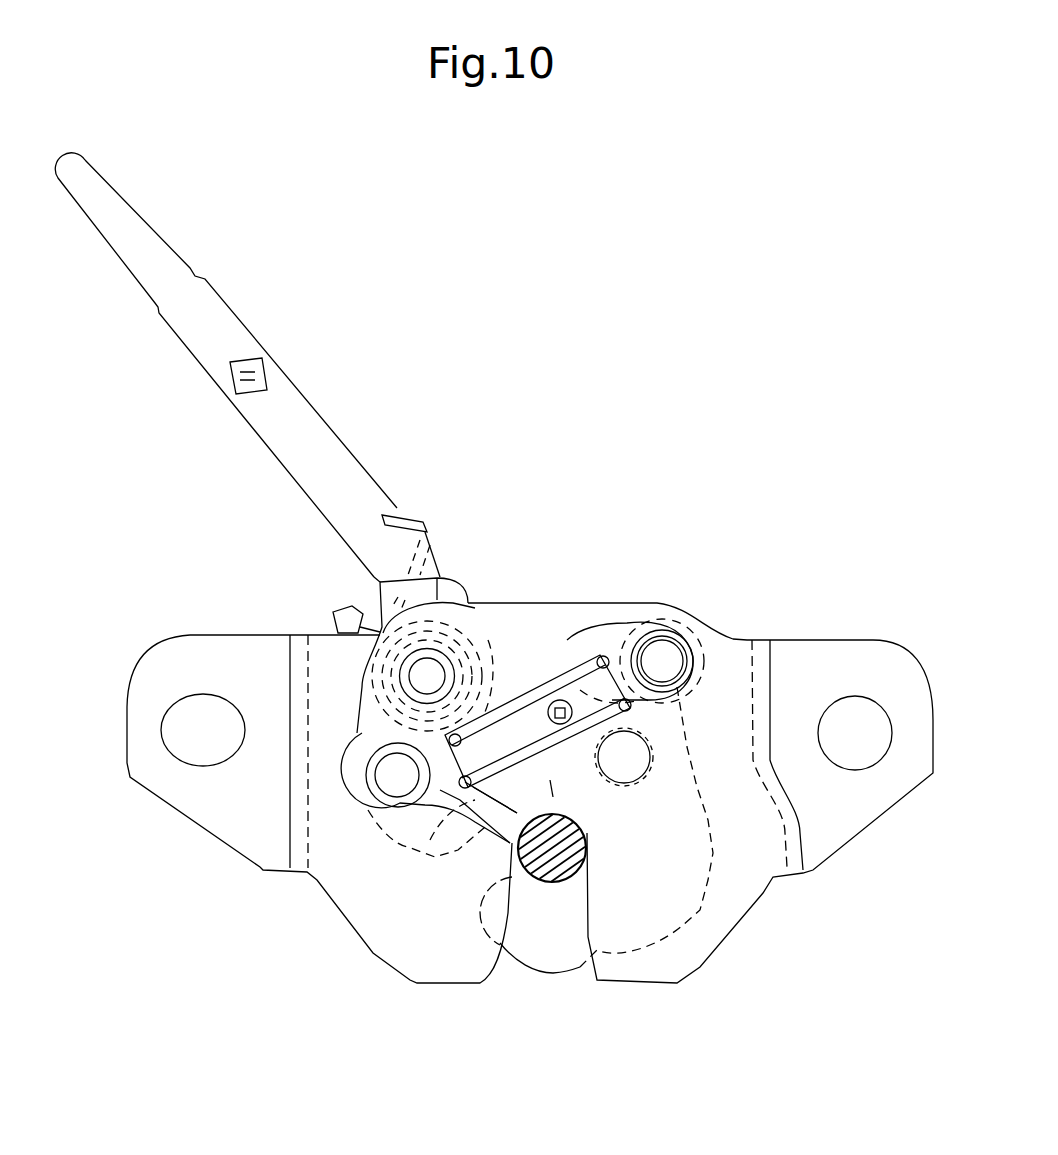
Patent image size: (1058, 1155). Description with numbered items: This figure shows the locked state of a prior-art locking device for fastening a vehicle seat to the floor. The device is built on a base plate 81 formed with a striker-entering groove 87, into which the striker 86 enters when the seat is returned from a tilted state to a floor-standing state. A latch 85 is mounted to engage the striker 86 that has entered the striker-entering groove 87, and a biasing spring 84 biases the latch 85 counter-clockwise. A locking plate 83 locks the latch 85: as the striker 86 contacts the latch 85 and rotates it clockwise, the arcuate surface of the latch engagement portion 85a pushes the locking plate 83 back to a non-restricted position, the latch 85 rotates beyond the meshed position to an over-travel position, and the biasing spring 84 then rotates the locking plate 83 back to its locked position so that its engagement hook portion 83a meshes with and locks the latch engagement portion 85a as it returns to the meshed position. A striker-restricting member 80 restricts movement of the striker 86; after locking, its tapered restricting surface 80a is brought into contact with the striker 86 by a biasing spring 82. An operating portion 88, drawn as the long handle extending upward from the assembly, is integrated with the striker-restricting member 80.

The striker-restricting member 80 is at (284, 505).
The tapered restricting surface 80a is at (553, 797).
The base plate 81 is at (743, 883).
The biasing spring 82 is at (393, 512).
The locking plate 83 is at (367, 810).
The engagement hook portion 83a is at (442, 810).
The biasing spring 84 is at (600, 680).
The latch 85 is at (523, 967).
The latch engagement portion 85a is at (445, 810).
The striker 86 is at (548, 883).
The striker-entering groove 87 is at (582, 913).
The operating portion 88 is at (211, 286).